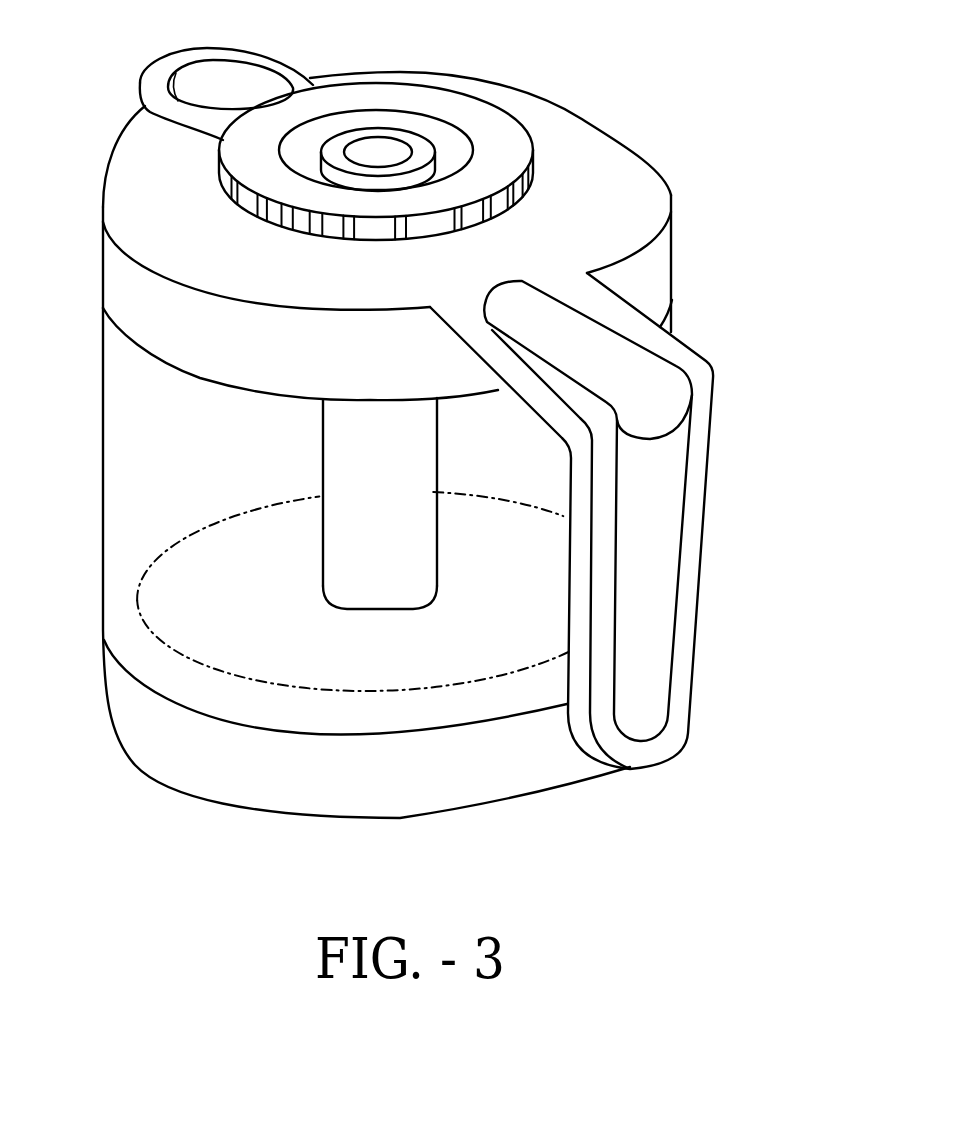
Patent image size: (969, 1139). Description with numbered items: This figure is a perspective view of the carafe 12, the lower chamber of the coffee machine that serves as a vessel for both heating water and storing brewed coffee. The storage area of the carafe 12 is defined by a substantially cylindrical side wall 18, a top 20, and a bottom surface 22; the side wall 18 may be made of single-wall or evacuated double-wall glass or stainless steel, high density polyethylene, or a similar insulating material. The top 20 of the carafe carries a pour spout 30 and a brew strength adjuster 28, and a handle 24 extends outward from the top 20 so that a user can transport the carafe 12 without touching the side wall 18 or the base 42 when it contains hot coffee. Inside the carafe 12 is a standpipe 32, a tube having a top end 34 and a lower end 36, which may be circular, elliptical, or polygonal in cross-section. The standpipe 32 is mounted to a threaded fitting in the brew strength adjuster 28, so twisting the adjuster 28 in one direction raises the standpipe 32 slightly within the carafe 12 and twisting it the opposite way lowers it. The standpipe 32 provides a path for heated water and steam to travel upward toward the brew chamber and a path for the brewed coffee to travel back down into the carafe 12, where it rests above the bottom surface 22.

The carafe 12 is at (768, 410).
The side wall 18 is at (103, 582).
The top 20 is at (643, 202).
The bottom surface 22 is at (228, 632).
The handle 24 is at (657, 612).
The brew strength adjuster 28 is at (517, 140).
The pour spout 30 is at (178, 80).
The standpipe 32 is at (340, 502).
The top end 34 is at (412, 137).
The lower end 36 is at (347, 596).
The base 42 is at (290, 790).